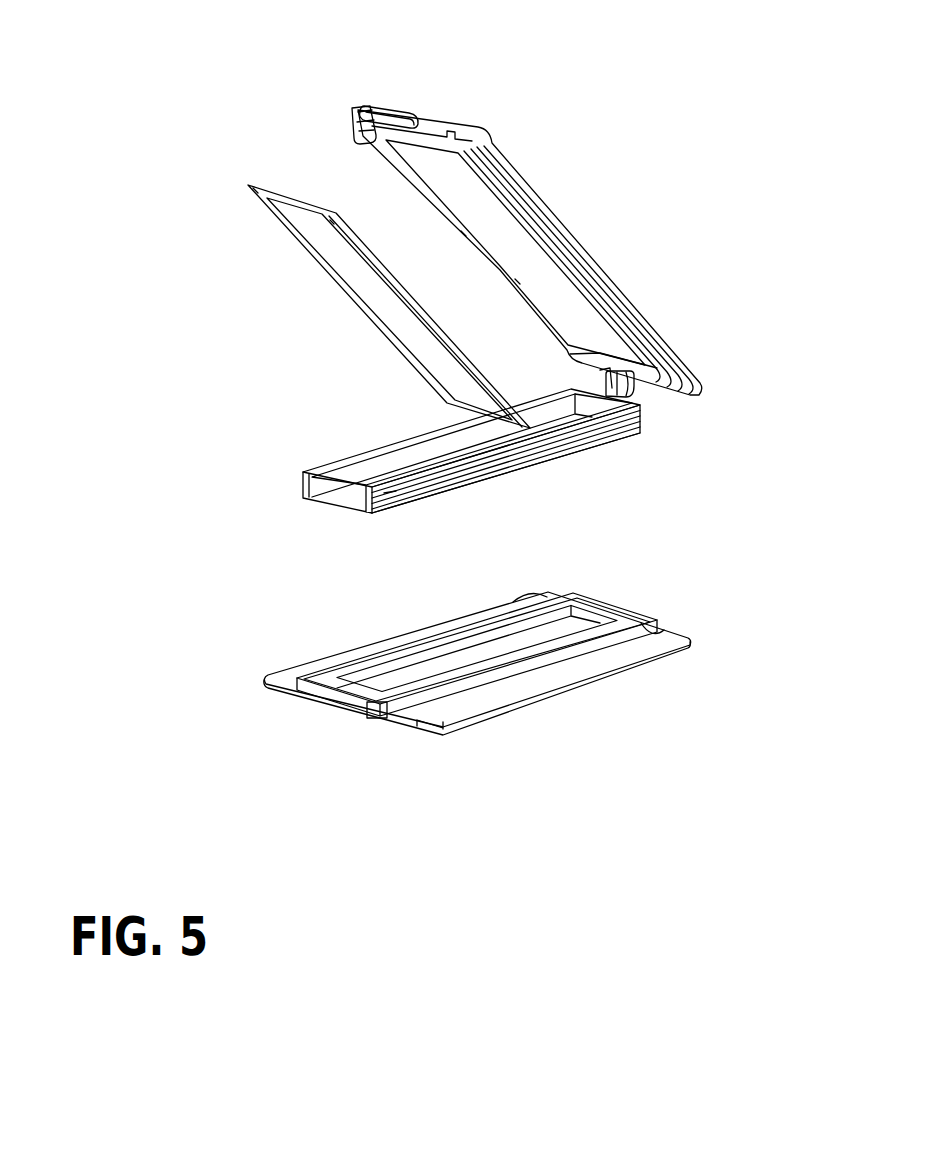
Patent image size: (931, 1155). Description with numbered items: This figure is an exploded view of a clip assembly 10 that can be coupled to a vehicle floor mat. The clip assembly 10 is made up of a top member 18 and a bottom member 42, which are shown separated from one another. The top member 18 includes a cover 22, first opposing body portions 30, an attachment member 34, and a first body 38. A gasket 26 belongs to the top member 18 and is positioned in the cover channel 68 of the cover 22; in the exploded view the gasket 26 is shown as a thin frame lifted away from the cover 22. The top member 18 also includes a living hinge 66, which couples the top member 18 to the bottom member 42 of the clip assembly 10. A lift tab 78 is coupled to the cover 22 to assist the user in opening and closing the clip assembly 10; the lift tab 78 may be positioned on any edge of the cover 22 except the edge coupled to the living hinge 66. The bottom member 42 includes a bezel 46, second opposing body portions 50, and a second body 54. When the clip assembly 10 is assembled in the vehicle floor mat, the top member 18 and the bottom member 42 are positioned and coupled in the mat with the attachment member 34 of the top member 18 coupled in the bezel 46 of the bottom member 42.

The clip assembly 10 is at (210, 106).
The top member 18 is at (720, 373).
The cover 22 is at (653, 328).
The gasket 26 is at (307, 252).
The first opposing body portions 30 is at (373, 507).
The attachment member 34 is at (593, 452).
The first body 38 is at (360, 470).
The bottom member 42 is at (668, 682).
The bezel 46 is at (606, 608).
The second opposing body portions 50 is at (422, 708).
The second body 54 is at (665, 634).
The living hinge 66 is at (648, 388).
The cover channel 68 is at (358, 130).
The lift tab 78 is at (398, 113).